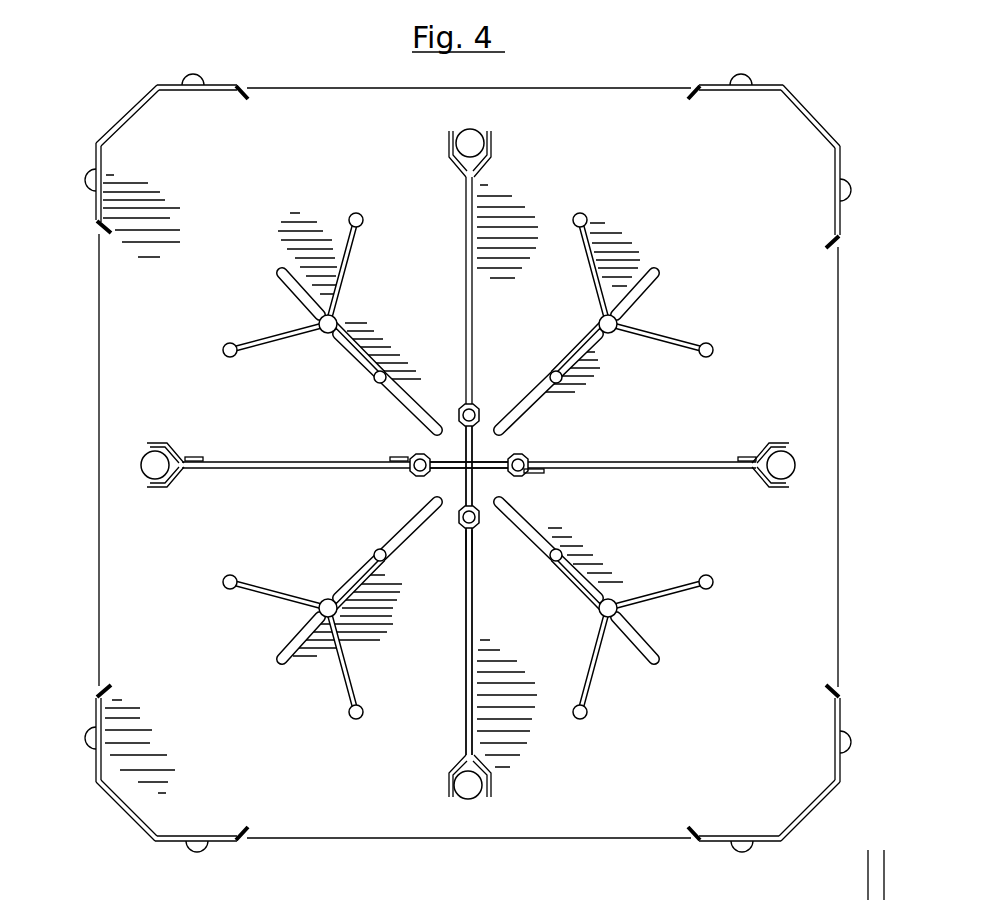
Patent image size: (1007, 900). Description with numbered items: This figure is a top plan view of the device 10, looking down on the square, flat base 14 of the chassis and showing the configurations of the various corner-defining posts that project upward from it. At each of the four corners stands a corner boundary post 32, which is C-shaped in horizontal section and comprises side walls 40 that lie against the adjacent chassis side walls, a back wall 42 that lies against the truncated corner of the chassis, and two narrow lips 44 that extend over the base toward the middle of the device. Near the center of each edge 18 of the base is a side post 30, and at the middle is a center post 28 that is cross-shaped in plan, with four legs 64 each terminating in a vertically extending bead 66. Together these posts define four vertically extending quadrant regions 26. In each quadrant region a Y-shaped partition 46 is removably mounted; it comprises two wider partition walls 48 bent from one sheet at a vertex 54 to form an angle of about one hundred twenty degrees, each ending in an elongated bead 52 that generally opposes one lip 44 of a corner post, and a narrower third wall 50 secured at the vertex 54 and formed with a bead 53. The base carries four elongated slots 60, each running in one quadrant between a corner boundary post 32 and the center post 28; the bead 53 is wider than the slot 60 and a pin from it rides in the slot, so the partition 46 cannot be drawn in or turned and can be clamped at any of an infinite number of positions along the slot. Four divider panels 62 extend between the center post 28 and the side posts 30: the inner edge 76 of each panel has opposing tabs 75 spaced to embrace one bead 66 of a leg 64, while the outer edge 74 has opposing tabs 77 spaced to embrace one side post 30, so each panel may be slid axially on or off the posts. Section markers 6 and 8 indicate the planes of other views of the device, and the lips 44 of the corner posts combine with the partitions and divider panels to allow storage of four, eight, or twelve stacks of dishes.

The device 10 is at (302, 70).
The base 14 is at (471, 465).
The edge 18 is at (622, 87).
The quadrant region 26 is at (257, 207).
The center post 28 is at (495, 464).
The side post 30 is at (484, 138).
The corner boundary post 32 is at (112, 122).
The side wall 40 is at (222, 82).
The back wall 42 is at (140, 93).
The lip 44 is at (242, 101).
The partition 46 is at (266, 362).
The partition wall 48 is at (358, 250).
The third wall 50 is at (366, 348).
The elongated bead 52 is at (362, 214).
The bead 53 is at (390, 372).
The vertex 54 is at (343, 313).
The elongated slot 60 is at (408, 405).
The divider panel 62 is at (292, 461).
The leg 64 is at (466, 450).
The bead 66 is at (476, 410).
The outer edge 74 is at (463, 750).
The tab 75 is at (392, 458).
The inner edge 76 is at (466, 547).
The tab 77 is at (166, 443).
The section line 6 is at (63, 500).
The section line 8 is at (637, 574).